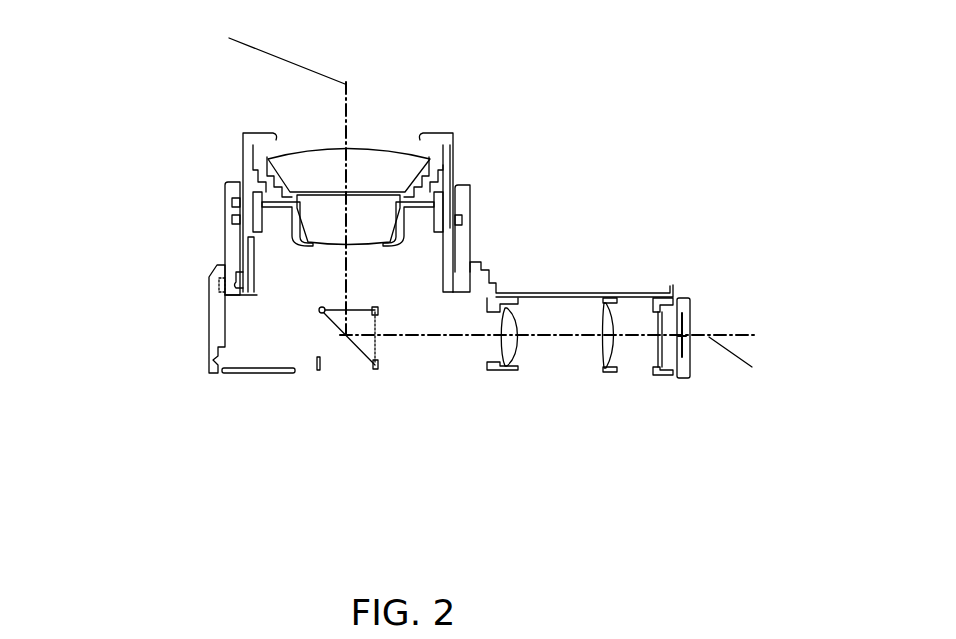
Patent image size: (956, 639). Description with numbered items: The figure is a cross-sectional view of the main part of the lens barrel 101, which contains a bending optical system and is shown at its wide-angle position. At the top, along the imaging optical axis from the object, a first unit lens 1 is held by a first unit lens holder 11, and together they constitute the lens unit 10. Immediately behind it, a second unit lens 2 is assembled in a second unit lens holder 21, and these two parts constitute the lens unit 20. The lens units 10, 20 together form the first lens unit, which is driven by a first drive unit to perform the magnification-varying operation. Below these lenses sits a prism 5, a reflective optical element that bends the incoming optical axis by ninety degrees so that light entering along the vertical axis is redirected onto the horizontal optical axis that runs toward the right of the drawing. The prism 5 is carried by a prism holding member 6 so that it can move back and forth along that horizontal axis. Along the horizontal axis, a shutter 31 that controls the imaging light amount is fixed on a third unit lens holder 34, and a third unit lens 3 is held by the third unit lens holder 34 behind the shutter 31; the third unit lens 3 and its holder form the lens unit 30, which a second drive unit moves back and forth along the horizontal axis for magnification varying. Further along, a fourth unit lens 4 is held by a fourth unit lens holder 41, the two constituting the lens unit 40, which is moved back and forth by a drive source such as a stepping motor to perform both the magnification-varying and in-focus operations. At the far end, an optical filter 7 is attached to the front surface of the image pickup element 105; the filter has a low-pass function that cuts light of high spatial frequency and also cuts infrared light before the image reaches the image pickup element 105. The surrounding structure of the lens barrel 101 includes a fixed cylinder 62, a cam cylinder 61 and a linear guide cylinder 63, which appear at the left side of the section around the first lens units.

The lens barrel 101 is at (637, 98).
The lens unit 10 is at (112, 30).
The first unit lens 1 is at (306, 157).
The first unit lens holder 11 is at (241, 150).
The lens unit 20 is at (118, 117).
The second unit lens 2 is at (316, 206).
The second unit lens holder 21 is at (291, 212).
The cam cylinder 61 is at (228, 234).
The linear guide cylinder 63 is at (252, 263).
The fixed cylinder 62 is at (217, 302).
The prism 5 is at (320, 312).
The prism holding member 6 is at (316, 359).
The lens unit 30 is at (442, 540).
The shutter 31 is at (498, 314).
The third unit lens 3 is at (508, 345).
The third unit lens holder 34 is at (504, 362).
The lens unit 40 is at (670, 492).
The fourth unit lens holder 41 is at (609, 375).
The fourth unit lens 4 is at (612, 358).
The optical filter 7 is at (657, 378).
The image pickup element 105 is at (683, 325).